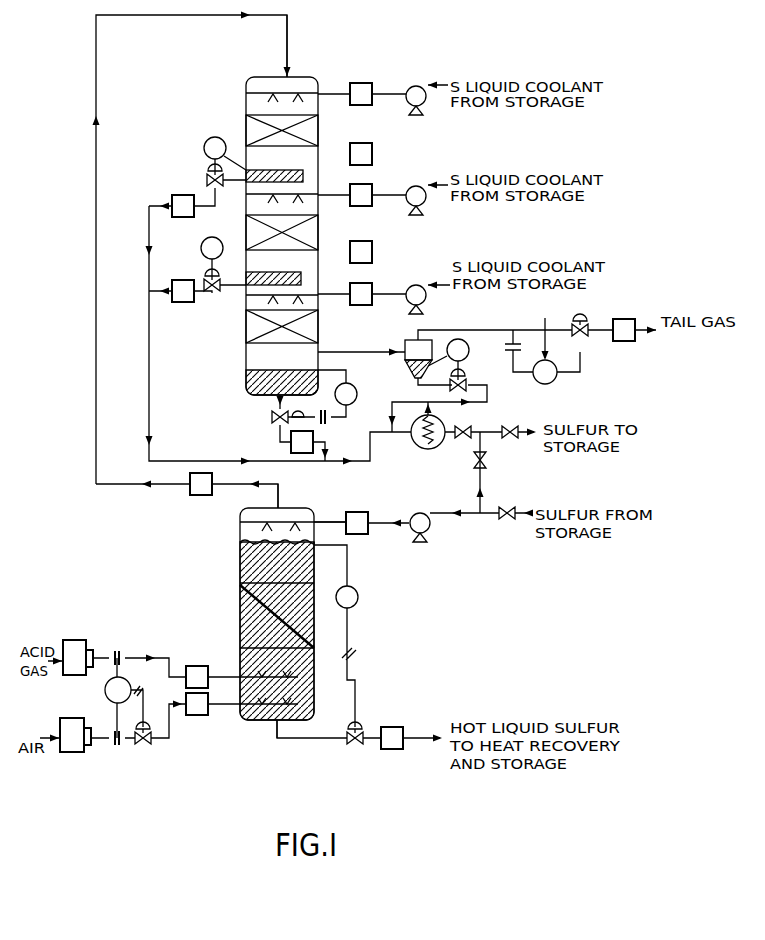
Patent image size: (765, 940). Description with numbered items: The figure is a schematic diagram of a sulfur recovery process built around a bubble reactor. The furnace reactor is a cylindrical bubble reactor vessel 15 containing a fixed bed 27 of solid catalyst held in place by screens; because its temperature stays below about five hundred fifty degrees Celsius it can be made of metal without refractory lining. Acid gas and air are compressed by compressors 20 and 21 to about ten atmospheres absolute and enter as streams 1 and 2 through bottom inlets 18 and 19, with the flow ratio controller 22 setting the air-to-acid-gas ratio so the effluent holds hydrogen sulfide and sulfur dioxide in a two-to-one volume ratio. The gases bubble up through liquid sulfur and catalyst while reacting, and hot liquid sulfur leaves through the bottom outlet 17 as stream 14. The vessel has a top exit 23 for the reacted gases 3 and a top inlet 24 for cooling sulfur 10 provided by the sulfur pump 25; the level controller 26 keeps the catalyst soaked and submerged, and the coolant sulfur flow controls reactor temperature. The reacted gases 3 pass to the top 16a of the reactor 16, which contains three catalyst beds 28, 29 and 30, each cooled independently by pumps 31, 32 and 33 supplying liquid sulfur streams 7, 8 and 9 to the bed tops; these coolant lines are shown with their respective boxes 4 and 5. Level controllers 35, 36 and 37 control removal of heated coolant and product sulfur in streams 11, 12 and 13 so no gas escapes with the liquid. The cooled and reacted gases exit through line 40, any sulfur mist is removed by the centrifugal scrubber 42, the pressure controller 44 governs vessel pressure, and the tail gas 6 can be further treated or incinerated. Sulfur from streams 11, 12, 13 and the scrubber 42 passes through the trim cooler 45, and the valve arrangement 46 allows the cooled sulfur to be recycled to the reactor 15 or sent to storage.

The acid gas stream 1 is at (197, 677).
The compressed air stream 2 is at (197, 704).
The reacted gases 3 is at (201, 484).
The liquid coolant line 4 is at (286, 160).
The liquid coolant line 5 is at (290, 260).
The tail gas stream 6 is at (624, 330).
The liquid sulfur stream 7 is at (361, 94).
The liquid sulfur stream 8 is at (361, 195).
The liquid sulfur stream 9 is at (361, 294).
The cooling sulfur stream 10 is at (357, 523).
The heated coolant and product sulfur stream 11 is at (183, 206).
The heated coolant and product sulfur stream 12 is at (183, 291).
The heated coolant and product sulfur stream 13 is at (302, 442).
The hot liquid sulfur stream 14 is at (392, 738).
The bubble reactor vessel 15 is at (240, 576).
The reactor 16 is at (246, 115).
The top of reactor 16a is at (287, 40).
The bottom outlet 17 is at (277, 737).
The bottom inlet 18 is at (232, 677).
The bottom inlet 19 is at (232, 705).
The compressor 20 is at (78, 657).
The compressor 21 is at (75, 735).
The flow ratio controller 22 is at (133, 698).
The top exit 23 is at (278, 483).
The top inlet 24 is at (335, 521).
The sulfur pump 25 is at (427, 532).
The level controller 26 is at (350, 609).
The fixed bed 27 is at (253, 626).
The catalyst bed 28 is at (310, 131).
The catalyst bed 29 is at (316, 240).
The catalyst bed 30 is at (318, 344).
The pump 31 is at (421, 119).
The pump 32 is at (424, 207).
The pump 33 is at (424, 304).
The level controller 35 is at (206, 159).
The level controller 36 is at (208, 240).
The level controller 37 is at (347, 404).
The exit line 40 is at (406, 349).
The centrifugal scrubber 42 is at (414, 367).
The pressure controller 44 is at (546, 340).
The trim cooler 45 is at (428, 449).
The valve arrangement 46 is at (486, 457).